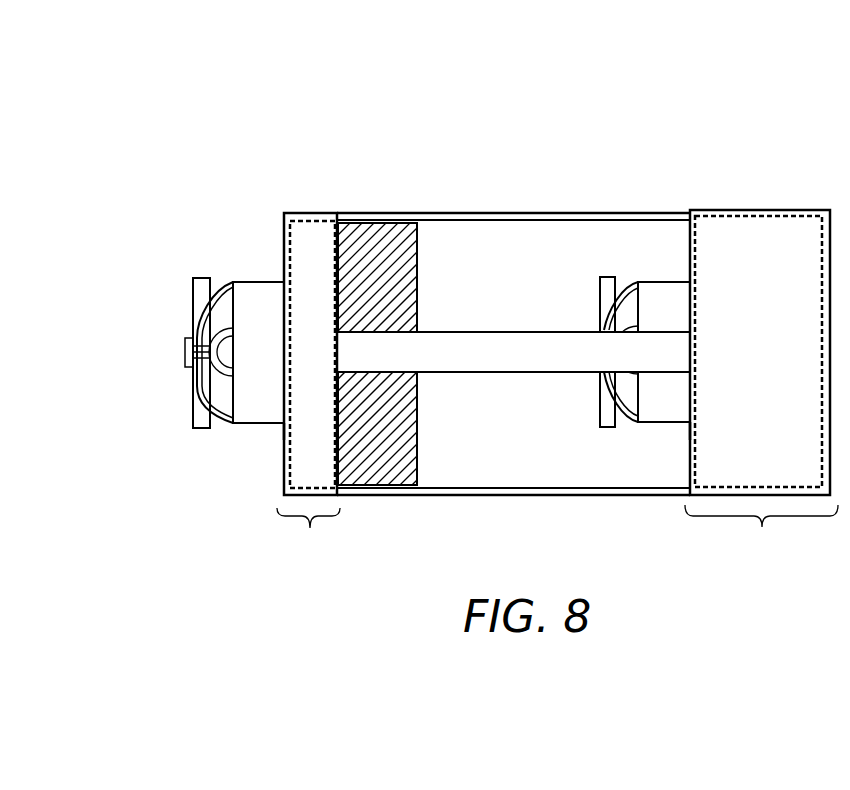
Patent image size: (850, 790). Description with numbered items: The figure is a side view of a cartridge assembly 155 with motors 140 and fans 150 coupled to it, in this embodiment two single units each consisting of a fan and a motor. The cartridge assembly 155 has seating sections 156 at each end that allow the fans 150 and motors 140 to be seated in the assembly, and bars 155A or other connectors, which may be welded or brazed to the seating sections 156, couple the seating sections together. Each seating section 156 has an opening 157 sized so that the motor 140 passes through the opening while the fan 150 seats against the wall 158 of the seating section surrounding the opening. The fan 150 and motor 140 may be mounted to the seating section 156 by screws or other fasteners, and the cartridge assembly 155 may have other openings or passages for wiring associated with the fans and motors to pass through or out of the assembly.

The motor 140 is at (230, 282).
The fan 150 is at (363, 296).
The cartridge assembly 155 is at (475, 162).
The bar 155A is at (547, 212).
The seating section 156 is at (557, 390).
The opening 157 is at (278, 432).
The wall 158 is at (283, 242).